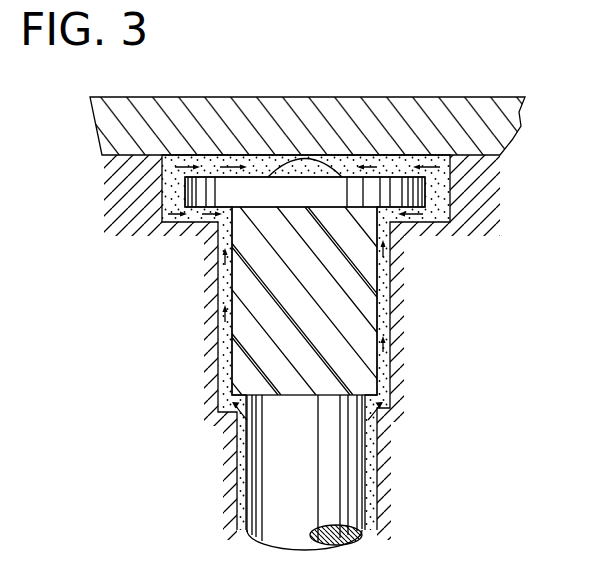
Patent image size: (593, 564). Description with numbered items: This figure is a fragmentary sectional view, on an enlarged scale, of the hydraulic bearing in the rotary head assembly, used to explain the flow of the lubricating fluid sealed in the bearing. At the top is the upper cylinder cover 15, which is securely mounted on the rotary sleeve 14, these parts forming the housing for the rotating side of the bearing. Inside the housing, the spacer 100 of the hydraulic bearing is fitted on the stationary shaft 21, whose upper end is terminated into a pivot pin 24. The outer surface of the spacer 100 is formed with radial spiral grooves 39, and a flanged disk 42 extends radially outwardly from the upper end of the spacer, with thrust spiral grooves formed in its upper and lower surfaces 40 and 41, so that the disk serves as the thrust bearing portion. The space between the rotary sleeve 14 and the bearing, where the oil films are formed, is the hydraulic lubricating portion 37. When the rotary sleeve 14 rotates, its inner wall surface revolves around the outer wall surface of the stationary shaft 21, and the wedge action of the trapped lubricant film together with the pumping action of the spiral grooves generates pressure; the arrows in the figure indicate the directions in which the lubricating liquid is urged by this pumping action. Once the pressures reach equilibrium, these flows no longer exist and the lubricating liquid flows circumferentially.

The upper cylinder cover 15 is at (449, 103).
The rotary sleeve 14 is at (498, 165).
The hydraulic lubricating portion 37 is at (162, 182).
The upper surface of the flanged disk 40 is at (212, 177).
The lower surface of the flanged disk 41 is at (195, 208).
The radial spiral grooves 39 is at (380, 284).
The spacer 100 is at (373, 369).
The pivot pin 24 is at (280, 155).
The flanged disk 42 is at (425, 188).
The stationary shaft 21 is at (352, 471).